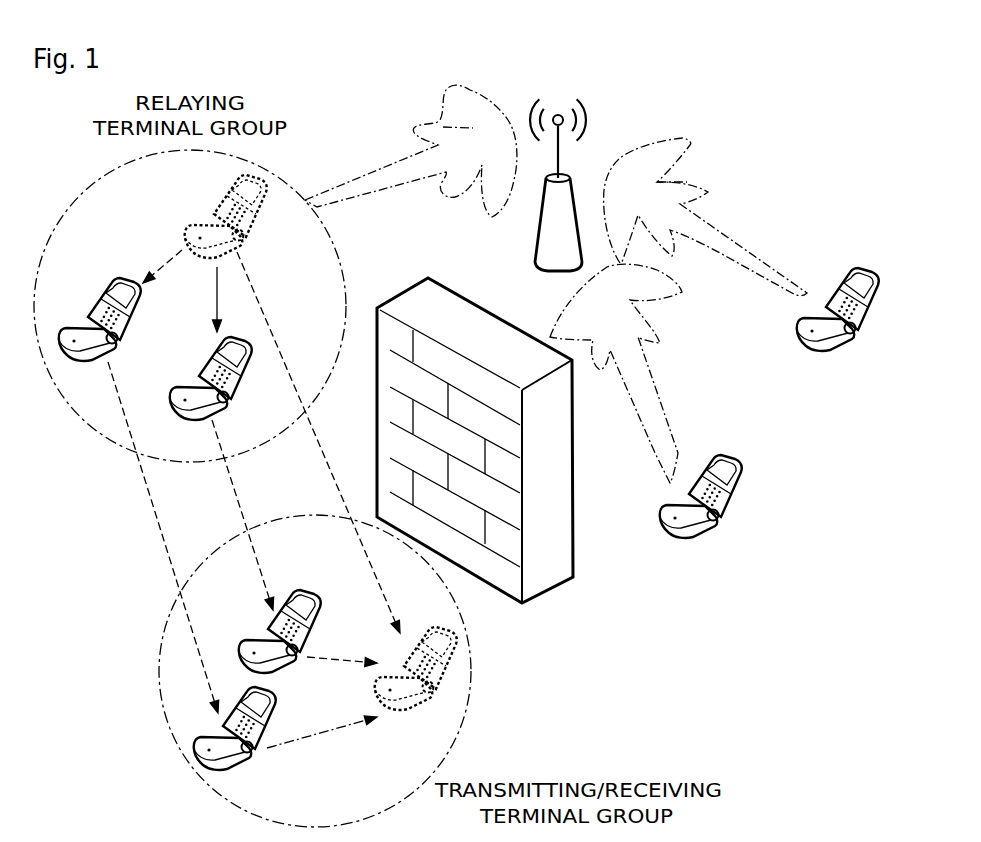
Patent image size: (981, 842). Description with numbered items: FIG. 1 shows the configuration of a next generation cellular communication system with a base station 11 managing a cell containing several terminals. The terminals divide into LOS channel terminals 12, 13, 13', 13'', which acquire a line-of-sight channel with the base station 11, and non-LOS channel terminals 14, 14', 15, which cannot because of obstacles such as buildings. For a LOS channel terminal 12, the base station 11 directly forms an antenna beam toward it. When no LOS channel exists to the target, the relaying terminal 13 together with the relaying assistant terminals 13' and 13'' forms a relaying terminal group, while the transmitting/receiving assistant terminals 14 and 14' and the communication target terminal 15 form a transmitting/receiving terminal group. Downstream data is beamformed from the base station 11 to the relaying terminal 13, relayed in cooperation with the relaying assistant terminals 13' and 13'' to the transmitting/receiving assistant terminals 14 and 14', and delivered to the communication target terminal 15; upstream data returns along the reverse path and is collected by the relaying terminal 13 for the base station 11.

The base station 11 is at (577, 188).
The LOS channel terminal 12 is at (810, 350).
The relaying terminal 13 is at (147, 216).
The relaying assistant terminal 13' is at (92, 381).
The relaying assistant terminal 13'' is at (211, 424).
The transmitting/receiving assistant terminal 14 is at (214, 631).
The transmitting/receiving assistant terminal 14' is at (202, 746).
The communication target terminal 15 is at (430, 688).